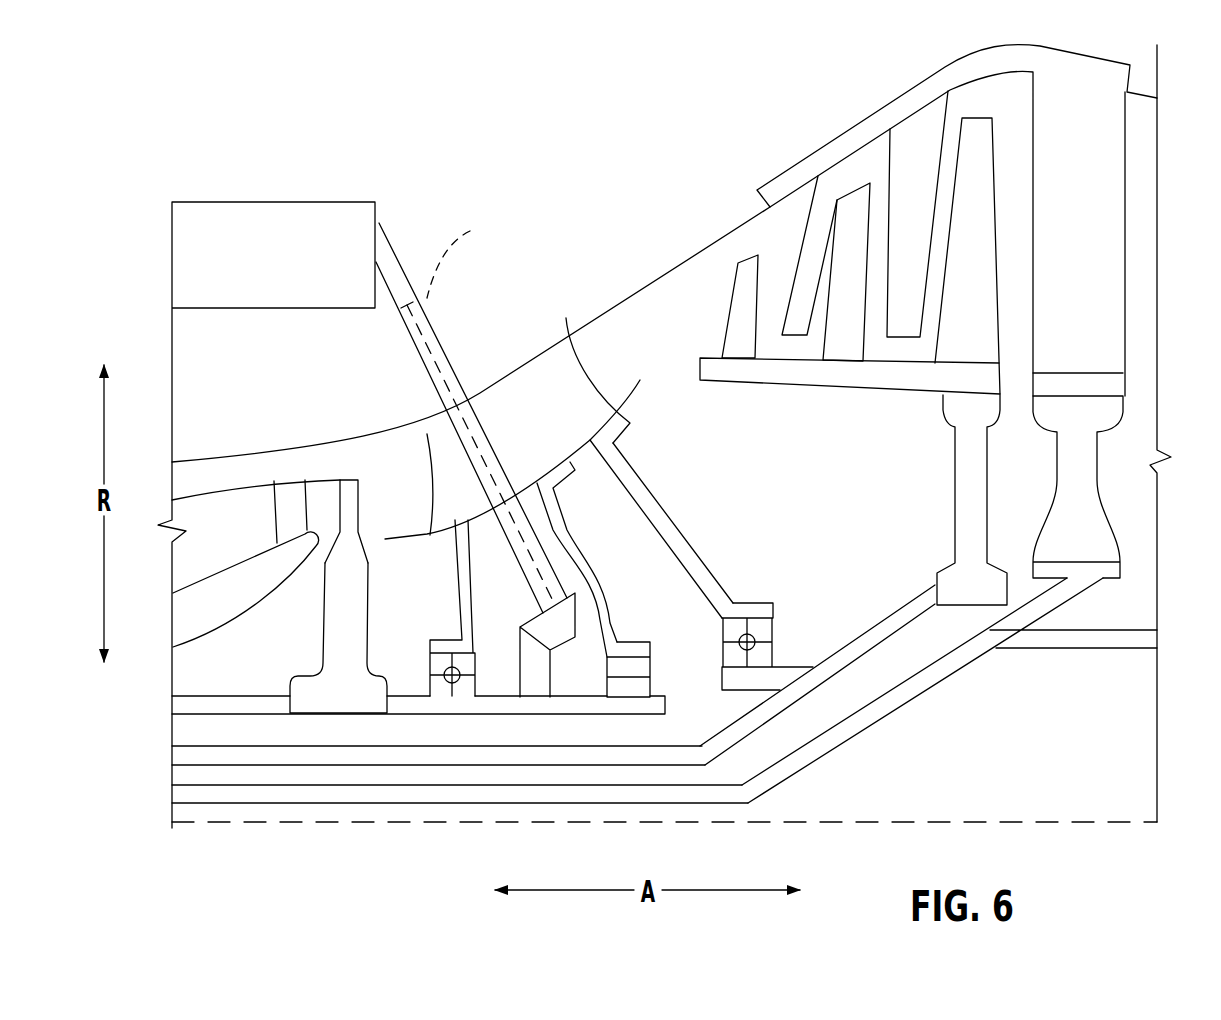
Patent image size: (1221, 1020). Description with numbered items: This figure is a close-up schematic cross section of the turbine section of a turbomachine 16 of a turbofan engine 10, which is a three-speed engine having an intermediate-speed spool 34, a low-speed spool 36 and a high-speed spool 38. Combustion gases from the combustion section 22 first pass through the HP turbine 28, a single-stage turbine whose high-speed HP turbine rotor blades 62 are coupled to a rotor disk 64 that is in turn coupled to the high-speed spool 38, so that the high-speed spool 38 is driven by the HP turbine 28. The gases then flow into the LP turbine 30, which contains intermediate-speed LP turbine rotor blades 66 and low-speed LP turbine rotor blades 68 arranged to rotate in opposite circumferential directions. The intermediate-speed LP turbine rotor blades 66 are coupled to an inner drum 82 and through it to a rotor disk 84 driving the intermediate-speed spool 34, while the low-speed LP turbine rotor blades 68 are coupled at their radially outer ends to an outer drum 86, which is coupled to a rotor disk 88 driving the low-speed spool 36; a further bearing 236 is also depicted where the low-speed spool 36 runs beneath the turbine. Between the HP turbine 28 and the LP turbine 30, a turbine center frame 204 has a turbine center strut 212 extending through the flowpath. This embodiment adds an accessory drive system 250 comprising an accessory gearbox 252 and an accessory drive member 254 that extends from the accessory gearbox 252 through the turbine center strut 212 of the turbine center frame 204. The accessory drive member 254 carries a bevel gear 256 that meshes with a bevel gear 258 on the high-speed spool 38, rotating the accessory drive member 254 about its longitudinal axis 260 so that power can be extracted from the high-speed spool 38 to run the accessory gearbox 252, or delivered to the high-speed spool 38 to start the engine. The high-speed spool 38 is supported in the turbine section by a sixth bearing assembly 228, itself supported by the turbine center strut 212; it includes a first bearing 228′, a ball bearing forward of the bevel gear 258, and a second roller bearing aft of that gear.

The turbofan engine 10 is at (341, 113).
The turbomachine 16 is at (451, 80).
The LP turbine 30 is at (877, 70).
The outer drum 86 is at (938, 74).
The accessory gearbox 252 is at (258, 222).
The accessory drive system 250 is at (442, 198).
The turbine center frame 204 is at (521, 300).
The longitudinal axis 260 is at (469, 252).
The intermediate-speed LP turbine rotor blades 66 is at (853, 205).
The low-speed LP turbine rotor blades 68 is at (790, 232).
The accessory drive member 254 is at (446, 346).
The turbine center strut 212 is at (566, 318).
The HP turbine 28 is at (362, 440).
The combustion section 22 is at (199, 515).
The high-speed HP turbine rotor blades 62 is at (349, 498).
The rotor disk 64 is at (335, 630).
The first bearing 228′ is at (438, 656).
The bevel gear 256 is at (567, 620).
The bearing assembly 236 is at (799, 625).
The inner drum 82 is at (843, 380).
The rotor disk 84 is at (965, 498).
The rotor disk 88 is at (1085, 462).
The low-speed spool 36 is at (902, 700).
The high-speed spool 38 is at (232, 705).
The sixth bearing assembly 228 is at (410, 684).
The bevel gear 258 is at (533, 685).
The intermediate-speed spool 34 is at (572, 762).